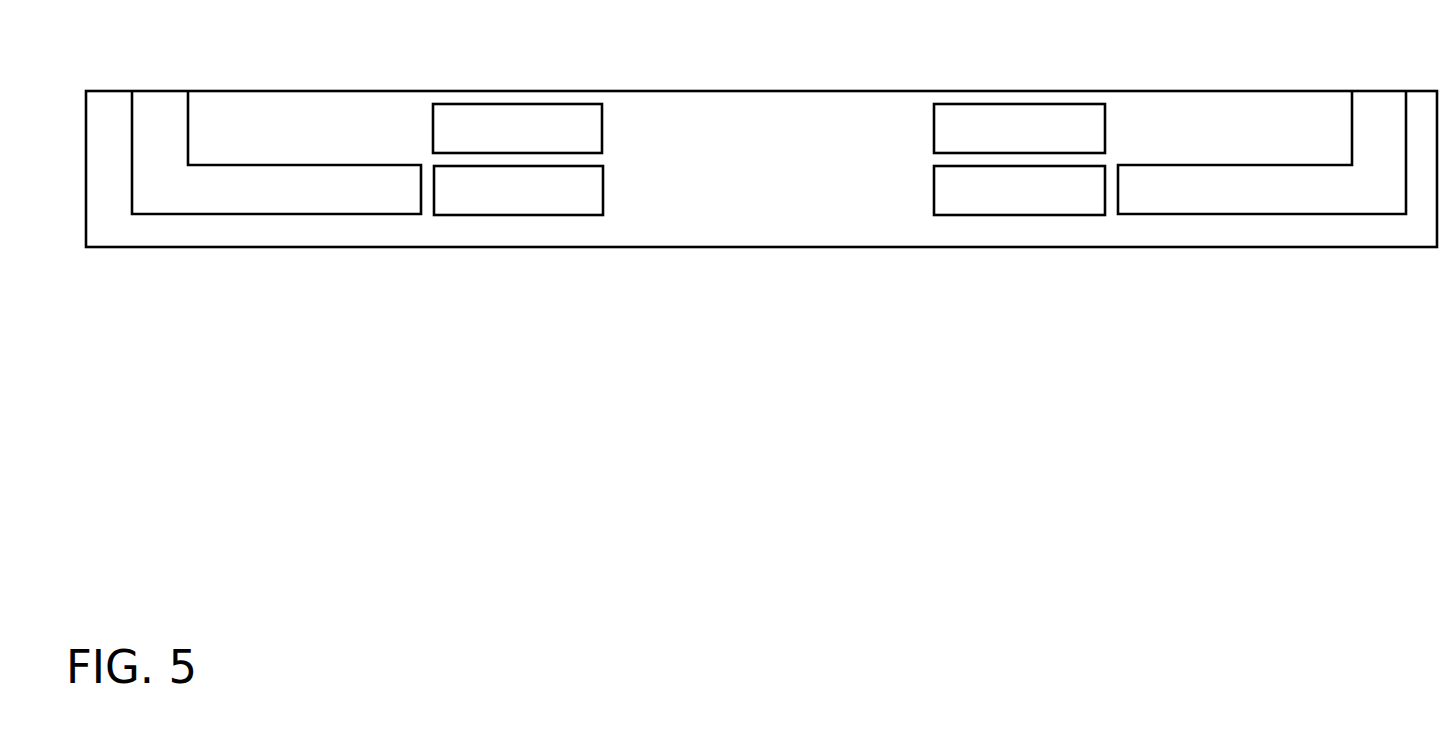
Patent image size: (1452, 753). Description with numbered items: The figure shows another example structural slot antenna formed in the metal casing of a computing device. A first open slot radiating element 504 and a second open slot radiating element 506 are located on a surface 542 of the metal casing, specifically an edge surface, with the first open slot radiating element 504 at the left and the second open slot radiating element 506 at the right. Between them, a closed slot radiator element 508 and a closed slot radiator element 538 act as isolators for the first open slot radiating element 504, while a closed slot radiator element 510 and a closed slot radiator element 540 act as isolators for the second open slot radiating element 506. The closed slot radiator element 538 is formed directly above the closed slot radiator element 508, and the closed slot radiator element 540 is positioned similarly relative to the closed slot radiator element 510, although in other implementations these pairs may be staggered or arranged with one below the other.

The first open slot radiating element 504 is at (261, 214).
The second open slot radiating element 506 is at (1292, 214).
The closed slot radiator element 508 is at (515, 215).
The closed slot radiator element 510 is at (1020, 215).
The closed slot radiator element 538 is at (520, 104).
The closed slot radiator element 540 is at (1020, 104).
The surface 542 is at (749, 130).